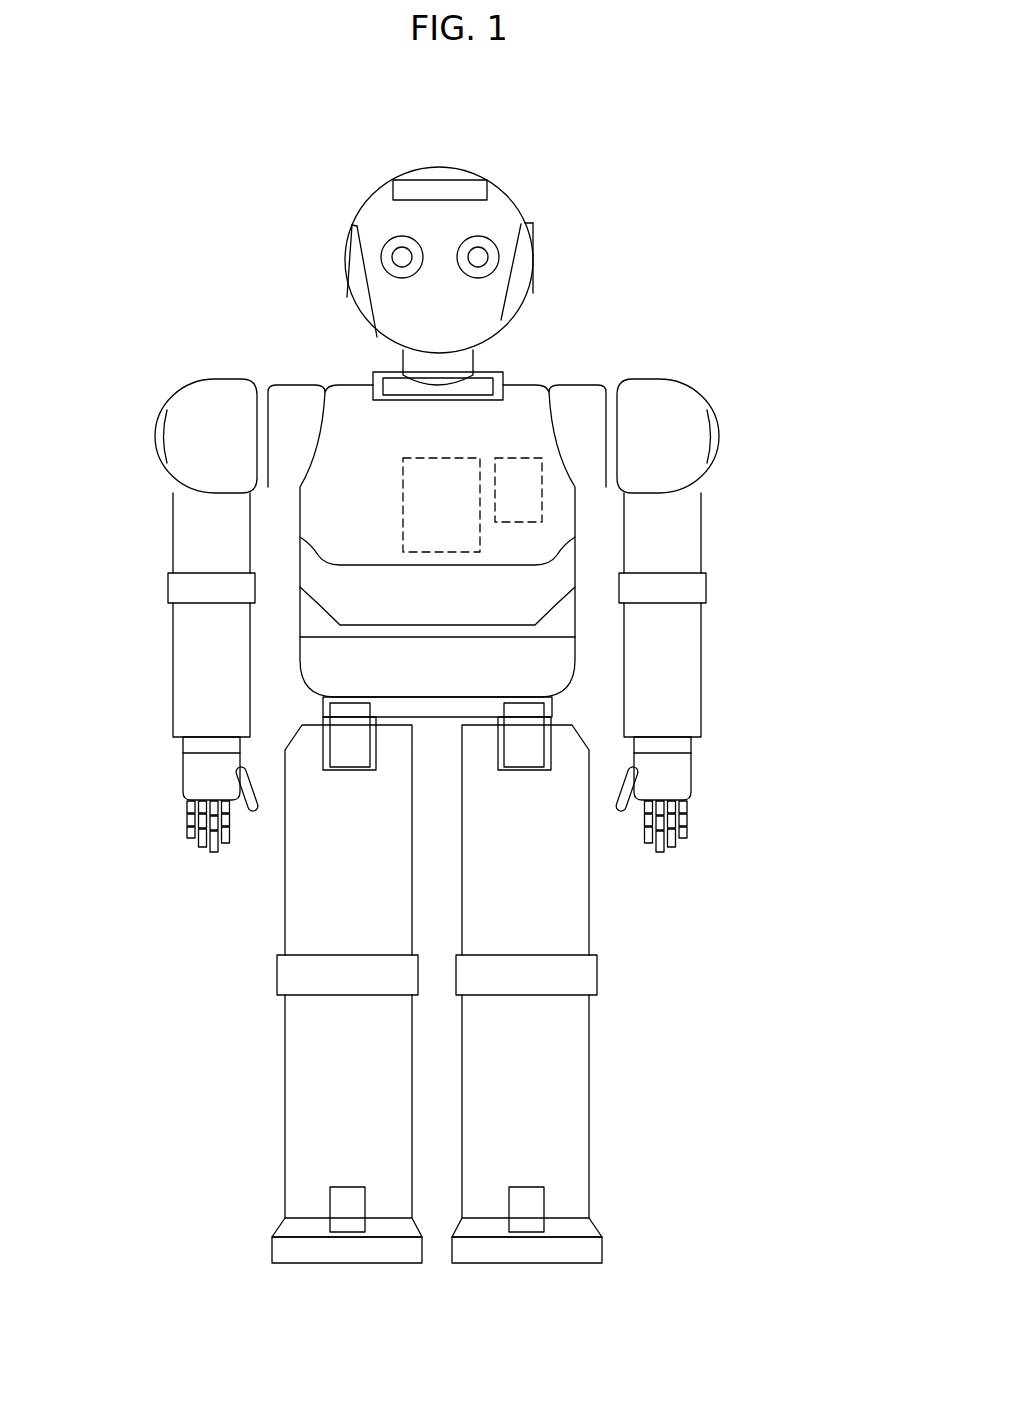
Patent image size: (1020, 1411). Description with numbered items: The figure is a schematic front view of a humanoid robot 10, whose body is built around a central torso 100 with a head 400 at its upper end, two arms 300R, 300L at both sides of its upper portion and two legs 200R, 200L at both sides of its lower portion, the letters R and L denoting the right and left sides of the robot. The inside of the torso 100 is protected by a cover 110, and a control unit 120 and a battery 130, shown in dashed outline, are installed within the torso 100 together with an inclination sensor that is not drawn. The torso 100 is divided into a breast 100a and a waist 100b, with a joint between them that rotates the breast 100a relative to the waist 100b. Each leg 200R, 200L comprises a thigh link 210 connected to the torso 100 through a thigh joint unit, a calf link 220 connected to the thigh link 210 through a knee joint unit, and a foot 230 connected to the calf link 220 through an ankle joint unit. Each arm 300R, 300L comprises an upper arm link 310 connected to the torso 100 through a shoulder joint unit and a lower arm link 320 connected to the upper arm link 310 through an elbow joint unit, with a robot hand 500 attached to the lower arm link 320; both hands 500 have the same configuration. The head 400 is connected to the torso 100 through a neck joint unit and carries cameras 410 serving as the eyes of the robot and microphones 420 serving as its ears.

The humanoid robot 10 is at (774, 149).
The torso 100 is at (840, 618).
The breast 100a is at (590, 596).
The waist 100b is at (590, 664).
The cover 110 is at (577, 520).
The control unit 120 is at (413, 470).
The battery 130 is at (527, 463).
The right leg 200R is at (254, 980).
The left leg 200L is at (616, 985).
The thigh link 210 is at (292, 913).
The calf link 220 is at (292, 1078).
The foot 230 is at (288, 1220).
The right arm 300R is at (158, 587).
The left arm 300L is at (714, 802).
The upper arm link 310 is at (185, 528).
The lower arm link 320 is at (185, 684).
The head 400 is at (538, 188).
The camera 410 is at (479, 256).
The microphone 420 is at (535, 266).
The robot hand 500 is at (193, 785).